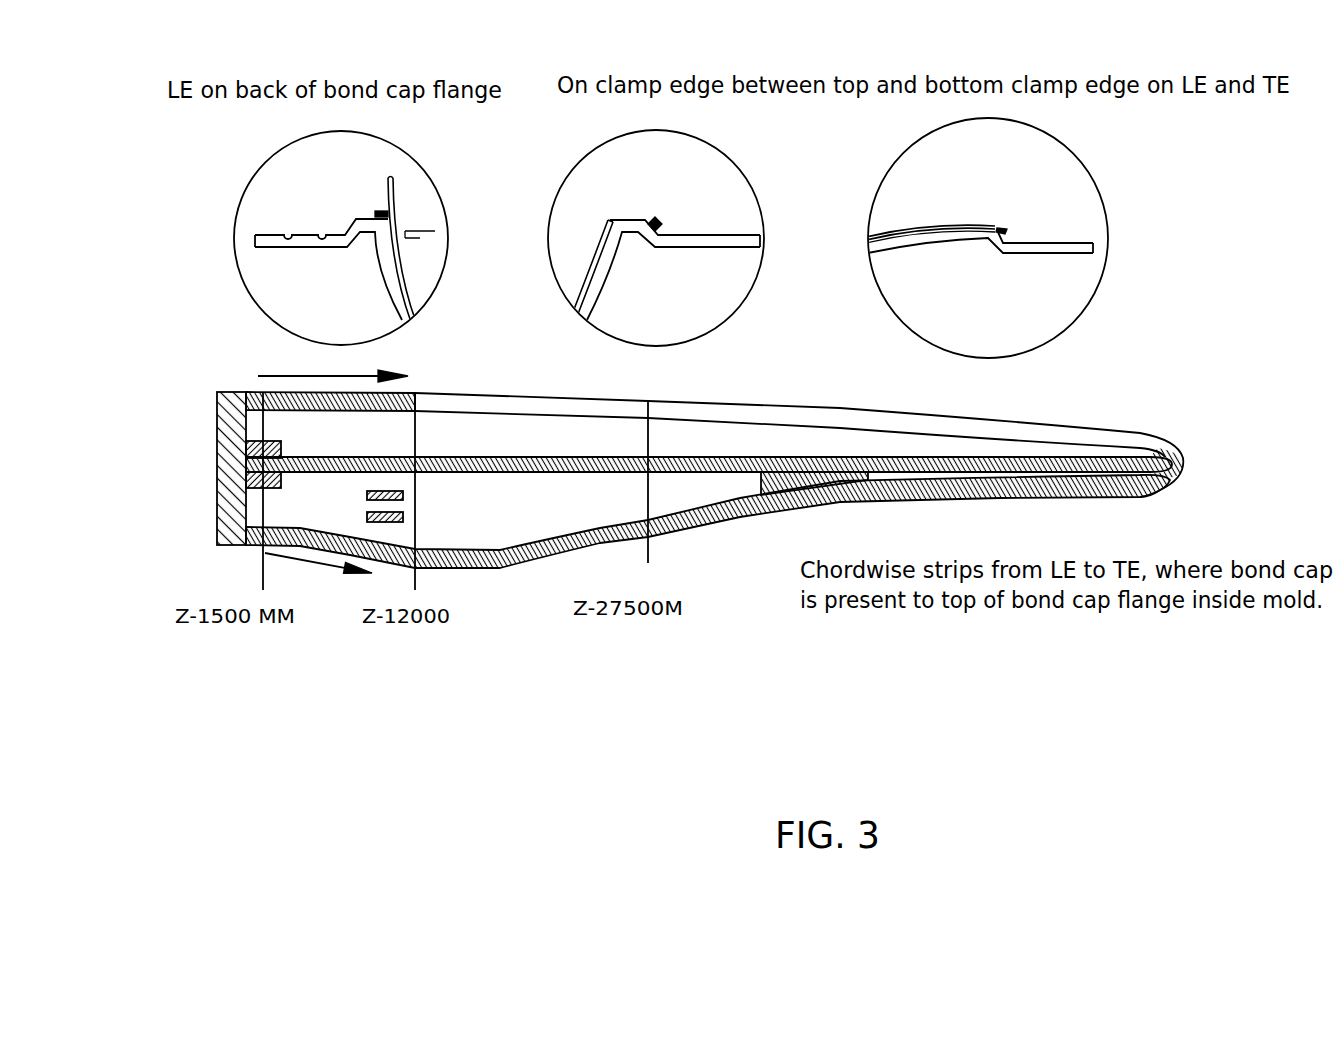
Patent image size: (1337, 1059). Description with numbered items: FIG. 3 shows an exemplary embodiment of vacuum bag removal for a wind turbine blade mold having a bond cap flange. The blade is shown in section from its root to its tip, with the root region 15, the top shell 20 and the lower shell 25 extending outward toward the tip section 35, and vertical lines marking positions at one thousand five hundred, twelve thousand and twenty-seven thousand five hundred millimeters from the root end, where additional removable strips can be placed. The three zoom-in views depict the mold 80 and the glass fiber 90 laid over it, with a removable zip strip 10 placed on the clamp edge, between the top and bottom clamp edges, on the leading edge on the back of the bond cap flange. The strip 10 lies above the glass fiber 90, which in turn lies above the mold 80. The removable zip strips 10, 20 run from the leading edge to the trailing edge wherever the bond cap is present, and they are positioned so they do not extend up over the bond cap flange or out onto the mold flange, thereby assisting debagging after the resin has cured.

The removable zip strip 10 is at (530, 190).
The blade root 15 is at (252, 568).
The removable zip strip 20 is at (520, 402).
The lower shell 25 is at (453, 580).
The shell tip section 35 is at (680, 548).
The mold 80 is at (1060, 250).
The glass fiber 90 is at (691, 237).